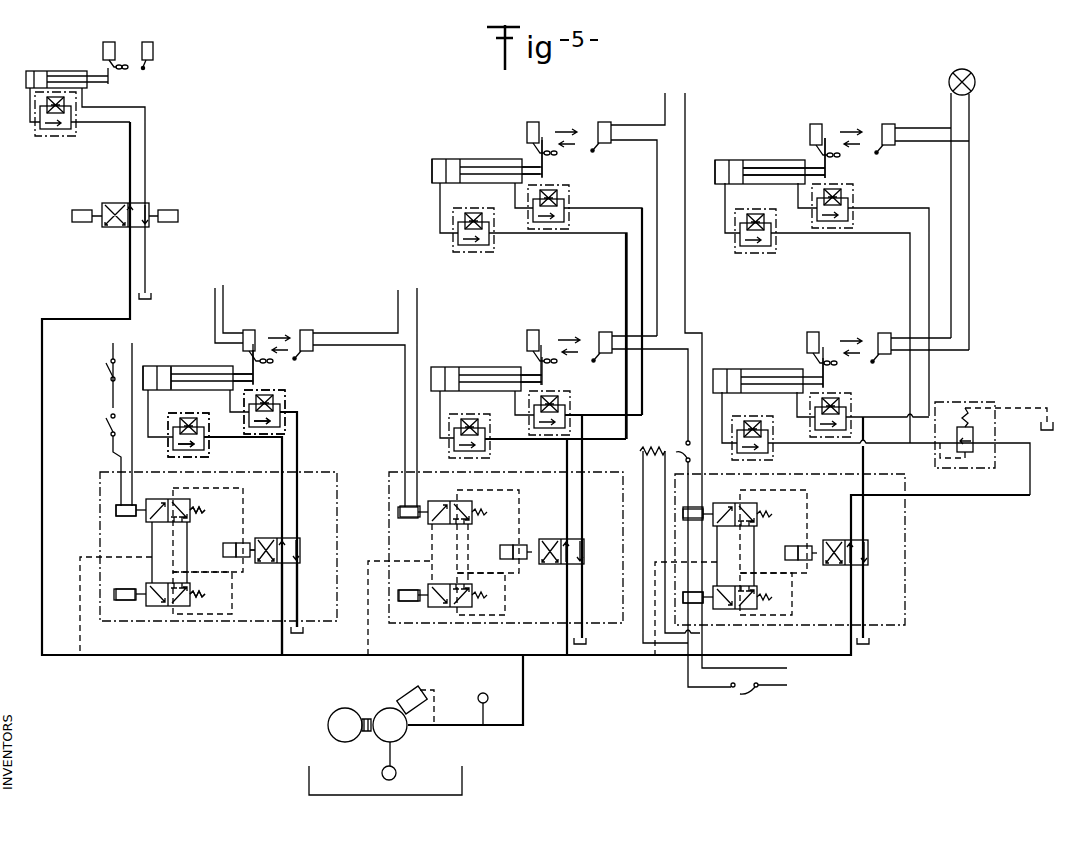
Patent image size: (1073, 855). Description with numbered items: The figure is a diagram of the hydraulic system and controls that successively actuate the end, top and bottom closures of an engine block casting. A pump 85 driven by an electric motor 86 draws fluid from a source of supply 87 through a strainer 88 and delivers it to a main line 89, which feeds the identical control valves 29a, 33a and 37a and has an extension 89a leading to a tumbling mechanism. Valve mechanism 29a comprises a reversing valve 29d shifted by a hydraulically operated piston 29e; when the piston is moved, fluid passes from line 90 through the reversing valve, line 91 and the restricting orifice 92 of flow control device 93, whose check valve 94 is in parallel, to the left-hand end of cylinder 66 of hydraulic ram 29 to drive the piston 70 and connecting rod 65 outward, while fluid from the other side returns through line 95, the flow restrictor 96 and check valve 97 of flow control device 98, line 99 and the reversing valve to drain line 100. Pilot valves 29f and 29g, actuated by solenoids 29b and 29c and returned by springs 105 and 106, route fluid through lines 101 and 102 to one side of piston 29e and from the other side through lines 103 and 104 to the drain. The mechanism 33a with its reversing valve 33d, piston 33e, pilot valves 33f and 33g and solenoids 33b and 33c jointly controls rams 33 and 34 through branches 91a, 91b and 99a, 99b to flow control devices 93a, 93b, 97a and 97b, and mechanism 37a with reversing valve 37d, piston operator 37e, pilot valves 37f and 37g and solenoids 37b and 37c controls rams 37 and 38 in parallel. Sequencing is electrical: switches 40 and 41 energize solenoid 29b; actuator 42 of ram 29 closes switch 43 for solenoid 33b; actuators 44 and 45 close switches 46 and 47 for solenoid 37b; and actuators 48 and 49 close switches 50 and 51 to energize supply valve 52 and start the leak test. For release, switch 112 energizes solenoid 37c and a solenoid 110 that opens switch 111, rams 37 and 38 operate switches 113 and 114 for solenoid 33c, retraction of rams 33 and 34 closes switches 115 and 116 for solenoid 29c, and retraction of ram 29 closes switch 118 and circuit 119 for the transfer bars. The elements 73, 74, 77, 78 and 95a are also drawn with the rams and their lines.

The hydraulic ram 29 is at (187, 366).
The hydraulic ram 33 is at (468, 159).
The hydraulic ram 34 is at (466, 367).
The hydraulic ram 37 is at (757, 160).
The hydraulic ram 38 is at (762, 369).
The cylinder 66 is at (150, 366).
The piston 70 is at (171, 366).
The connecting rod 65 is at (240, 372).
The piston rod 73 is at (525, 162).
The piston rod 77 is at (778, 168).
The cylinder head 74 is at (440, 159).
The cylinder head 78 is at (724, 160).
The actuator 42 is at (258, 373).
The actuator 44 is at (547, 170).
The actuator 45 is at (546, 378).
The actuator 48 is at (835, 167).
The actuator 49 is at (828, 378).
The switch 43 is at (305, 330).
The switch 46 is at (610, 122).
The switch 47 is at (607, 332).
The switch 50 is at (888, 124).
The switch 51 is at (887, 333).
The switch 118 is at (248, 330).
The switch 115 is at (536, 122).
The switch 116 is at (535, 330).
The switch 113 is at (815, 124).
The switch 114 is at (813, 332).
The circuit 119 is at (224, 300).
The switch 40 is at (107, 368).
The switch 41 is at (109, 426).
The restricting orifice 92 is at (188, 419).
The flow control device 93 is at (166, 422).
The check valve 94 is at (175, 447).
The line 95 is at (230, 402).
The flow restrictor 96 is at (268, 395).
The check valve 97 is at (250, 418).
The flow control device 98 is at (288, 412).
The line 91 is at (282, 450).
The line 99 is at (298, 455).
The extension 89a is at (75, 318).
The main line 89 is at (457, 656).
The line 90 is at (282, 640).
The line 100 is at (297, 585).
The line 101 is at (80, 640).
The line 102 is at (232, 488).
The line 103 is at (232, 588).
The line 104 is at (223, 550).
The spring 105 is at (206, 511).
The spring 106 is at (200, 594).
The control valve 29a is at (99, 529).
The solenoid 29b is at (112, 508).
The solenoid 29c is at (124, 589).
The reversing valve 29d is at (300, 540).
The piston 29e is at (231, 543).
The pilot valve 29f is at (170, 500).
The pilot valve 29g is at (170, 610).
The control valve 33a is at (387, 475).
The solenoid 33b is at (403, 520).
The solenoid 33c is at (410, 586).
The reversing valve 33d is at (586, 539).
The piston 33e is at (505, 545).
The pilot valve 33f is at (453, 503).
The pilot valve 33g is at (440, 607).
The control valve 37a is at (905, 525).
The solenoid 37b is at (688, 520).
The solenoid 37c is at (691, 592).
The reversing valve 37d is at (867, 548).
The piston operator 37e is at (795, 546).
The pilot valve 37f is at (733, 503).
The pilot valve 37g is at (725, 610).
The flow control device 93a is at (476, 258).
The flow control device 93b is at (452, 456).
The flow control device 97a is at (575, 190).
The flow control device 97b is at (570, 393).
The conduit 95a is at (512, 197).
The branch 91a is at (626, 398).
The branch 91b is at (520, 444).
The branch 99a is at (657, 372).
The branch 99b is at (515, 400).
The pump 85 is at (383, 710).
The electric motor 86 is at (343, 708).
The source of supply 87 is at (465, 773).
The strainer 88 is at (398, 773).
The supply valve 52 is at (975, 78).
The solenoid 110 is at (655, 447).
The switch 111 is at (682, 458).
The switch 112 is at (745, 687).